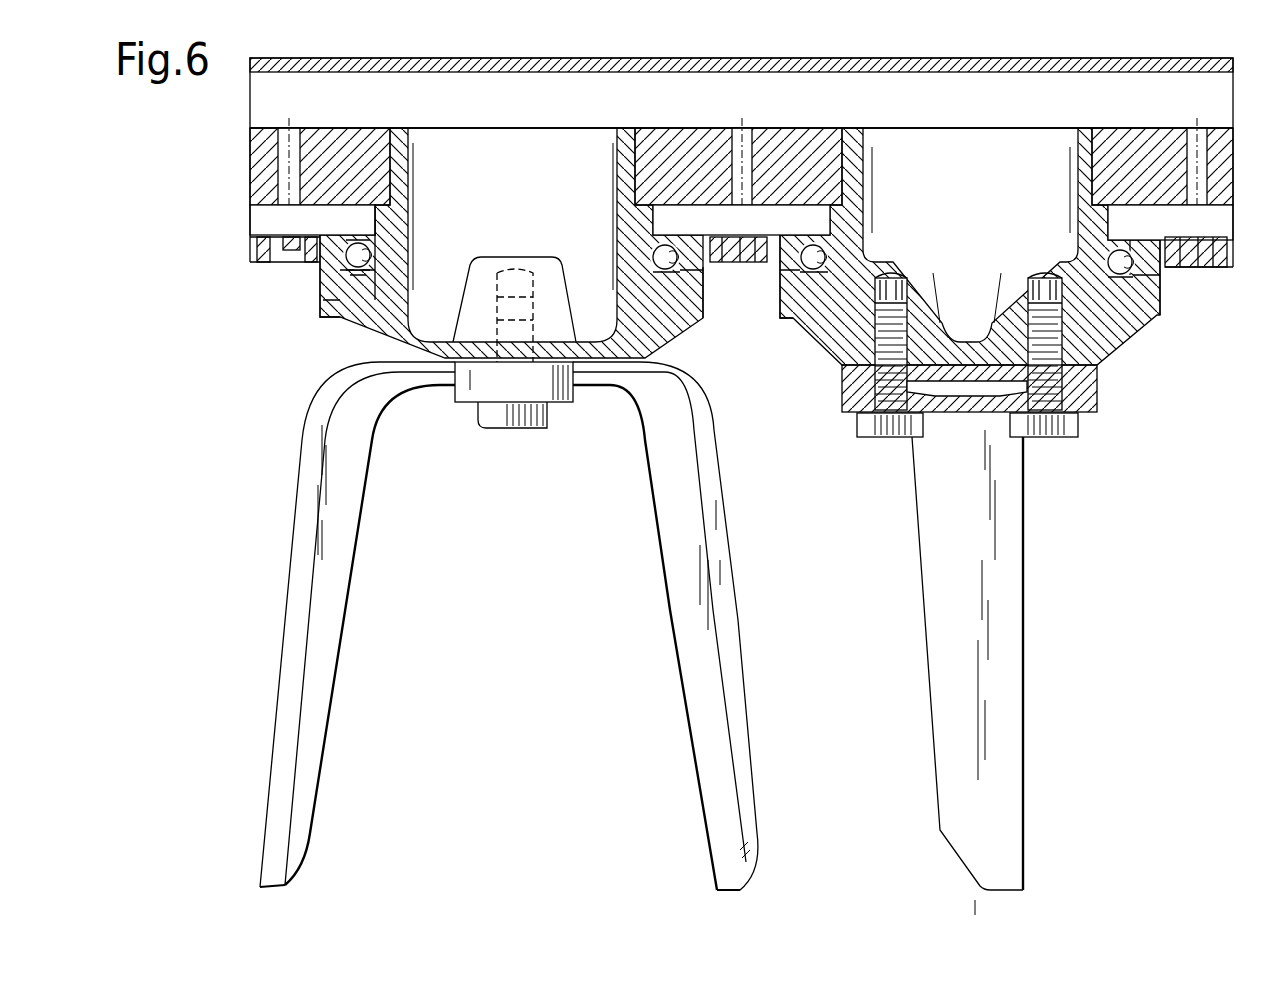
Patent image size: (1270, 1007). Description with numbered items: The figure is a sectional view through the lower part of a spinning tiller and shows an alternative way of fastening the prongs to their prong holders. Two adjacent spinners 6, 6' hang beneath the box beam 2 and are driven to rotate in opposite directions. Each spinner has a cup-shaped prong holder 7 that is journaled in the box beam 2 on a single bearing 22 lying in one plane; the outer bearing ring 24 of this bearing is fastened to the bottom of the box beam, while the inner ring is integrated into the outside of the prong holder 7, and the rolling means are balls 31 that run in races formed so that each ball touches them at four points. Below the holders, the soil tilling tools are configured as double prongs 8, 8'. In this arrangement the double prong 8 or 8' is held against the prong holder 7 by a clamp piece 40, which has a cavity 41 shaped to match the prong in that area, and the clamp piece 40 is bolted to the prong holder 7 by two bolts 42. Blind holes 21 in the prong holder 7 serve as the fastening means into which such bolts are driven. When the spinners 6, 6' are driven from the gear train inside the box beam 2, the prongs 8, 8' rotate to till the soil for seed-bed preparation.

The box beam 2 is at (697, 85).
The spinner 6 is at (899, 716).
The spinner 6' is at (232, 752).
The prong holder 7 is at (378, 322).
The prong 8 is at (988, 672).
The prong 8' is at (509, 626).
The blind hole 21 is at (520, 287).
The bearing 22 is at (337, 265).
The outer bearing ring 24 is at (328, 300).
The ball 31 is at (368, 243).
The clamp piece 40 is at (562, 405).
The cavity 41 is at (950, 394).
The bolt 42 is at (507, 428).